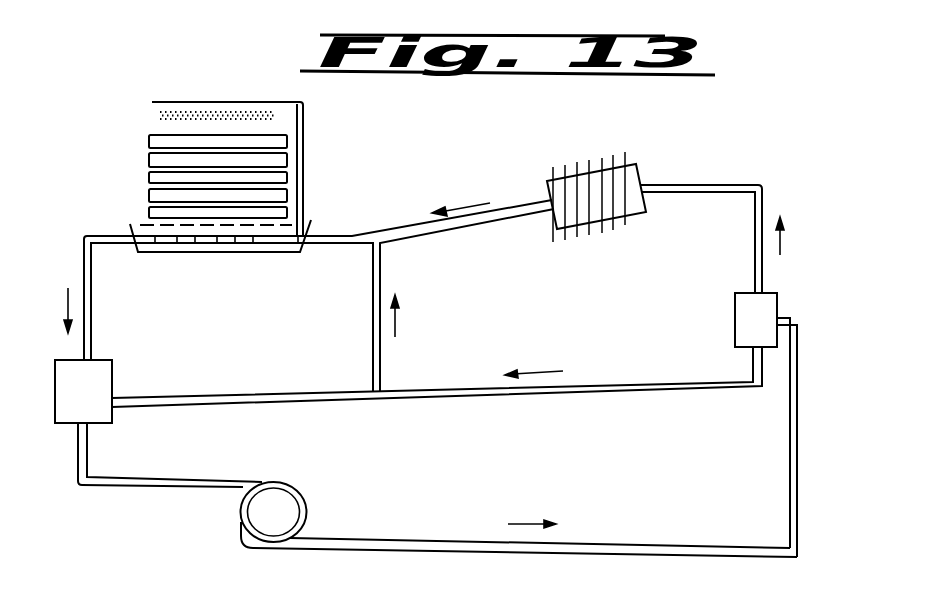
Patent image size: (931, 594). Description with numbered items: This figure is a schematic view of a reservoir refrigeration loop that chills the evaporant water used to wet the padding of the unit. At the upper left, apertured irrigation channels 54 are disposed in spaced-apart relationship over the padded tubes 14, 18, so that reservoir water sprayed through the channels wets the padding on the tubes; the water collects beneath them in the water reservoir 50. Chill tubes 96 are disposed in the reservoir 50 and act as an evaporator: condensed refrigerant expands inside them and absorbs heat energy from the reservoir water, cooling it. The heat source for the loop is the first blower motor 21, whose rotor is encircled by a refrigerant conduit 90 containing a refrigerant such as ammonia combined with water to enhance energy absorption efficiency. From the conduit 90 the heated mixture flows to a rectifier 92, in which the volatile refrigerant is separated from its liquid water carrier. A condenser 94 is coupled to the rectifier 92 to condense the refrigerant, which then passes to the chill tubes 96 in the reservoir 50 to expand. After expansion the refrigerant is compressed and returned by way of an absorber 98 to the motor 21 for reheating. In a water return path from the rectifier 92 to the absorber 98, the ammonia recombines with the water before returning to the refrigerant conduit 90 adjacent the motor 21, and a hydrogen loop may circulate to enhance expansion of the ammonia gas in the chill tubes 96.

The apertured irrigation channels 54 is at (216, 100).
The padded tube 14 is at (170, 176).
The padded tube 18 is at (155, 157).
The water reservoir 50 is at (258, 248).
The chill tubes 96 is at (207, 248).
The condenser 94 is at (597, 176).
The rectifier 92 is at (745, 322).
The absorber 98 is at (94, 404).
The refrigerant conduit 90 is at (295, 489).
The first blower motor 21 is at (282, 513).